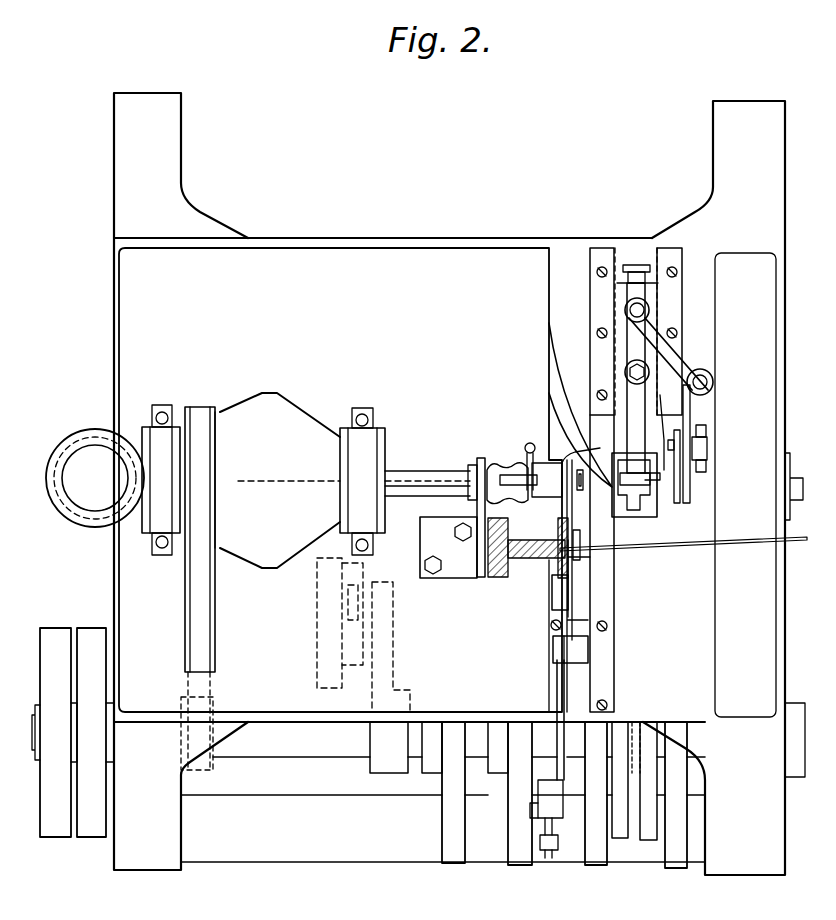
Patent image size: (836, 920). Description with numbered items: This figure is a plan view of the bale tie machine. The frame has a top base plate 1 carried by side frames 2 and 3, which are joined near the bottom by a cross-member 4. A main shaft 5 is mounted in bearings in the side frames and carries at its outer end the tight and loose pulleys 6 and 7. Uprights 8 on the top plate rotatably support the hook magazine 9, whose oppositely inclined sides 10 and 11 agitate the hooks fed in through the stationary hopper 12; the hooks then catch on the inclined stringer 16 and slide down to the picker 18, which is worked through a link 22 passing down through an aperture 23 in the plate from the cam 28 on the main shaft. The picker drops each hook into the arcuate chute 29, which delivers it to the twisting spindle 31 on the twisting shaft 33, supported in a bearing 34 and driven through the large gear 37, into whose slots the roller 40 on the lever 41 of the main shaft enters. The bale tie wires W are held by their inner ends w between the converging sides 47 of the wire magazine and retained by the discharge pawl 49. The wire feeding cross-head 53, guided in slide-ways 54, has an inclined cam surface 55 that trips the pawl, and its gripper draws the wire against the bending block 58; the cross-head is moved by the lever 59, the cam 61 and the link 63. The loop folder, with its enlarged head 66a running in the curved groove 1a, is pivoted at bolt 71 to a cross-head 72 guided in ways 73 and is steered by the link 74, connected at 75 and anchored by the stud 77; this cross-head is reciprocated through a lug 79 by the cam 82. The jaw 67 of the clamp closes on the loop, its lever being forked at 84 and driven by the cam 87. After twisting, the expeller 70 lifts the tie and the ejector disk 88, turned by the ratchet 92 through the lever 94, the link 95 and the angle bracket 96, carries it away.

The top base plate 1 is at (406, 250).
The curved groove 1a is at (552, 380).
The side frame 2 is at (152, 866).
The side frame 3 is at (765, 860).
The cross-member 4 is at (294, 862).
The main shaft 5 is at (324, 758).
The tight pulley 6 is at (92, 628).
The loose pulley 7 is at (53, 628).
The upright 8 is at (163, 405).
The magazine 9 is at (282, 394).
The inclined side 10 is at (230, 560).
The inclined side 11 is at (292, 563).
The stationary hopper 12 is at (88, 432).
The inclined stringer 16 is at (290, 480).
The picker 18 is at (528, 520).
The link 22 is at (536, 446).
The aperture 23 is at (527, 448).
The cam 28 is at (453, 864).
The arcuate chute 29 is at (497, 466).
The twisting spindle 31 is at (591, 445).
The twisting shaft 33 is at (406, 470).
The bearing 34 is at (476, 460).
The large gear 37 is at (316, 662).
The roller 40 is at (340, 628).
The lever 41 is at (398, 653).
The magazine side 47 is at (570, 612).
The discharge pawl 49 is at (582, 560).
The wire feeding cross-head 53 is at (592, 618).
The slide-way 54 is at (612, 652).
The inclined cam surface 55 is at (593, 570).
The bending block 58 is at (552, 594).
The lever 59 is at (552, 866).
The cam 61 is at (516, 866).
The link 63 is at (556, 682).
The enlarged head 66a is at (658, 476).
The jaw 67 is at (648, 510).
The expeller 70 is at (582, 490).
The pivot bolt 71 is at (628, 374).
The cross-head 72 is at (620, 292).
The ways 73 is at (620, 252).
The link 74 is at (680, 362).
The pivot connection 75 is at (650, 310).
The stud 77 is at (714, 382).
The lug 79 is at (622, 840).
The cam 82 is at (600, 872).
The fork 84 is at (650, 842).
The cam 87 is at (685, 872).
The ejector disk 88 is at (708, 440).
The ratchet 92 is at (682, 450).
The lever 94 is at (684, 465).
The link 95 is at (692, 405).
The angle bracket 96 is at (650, 372).
The inner end of tie wire w is at (490, 548).
The bale tie wire W is at (683, 554).